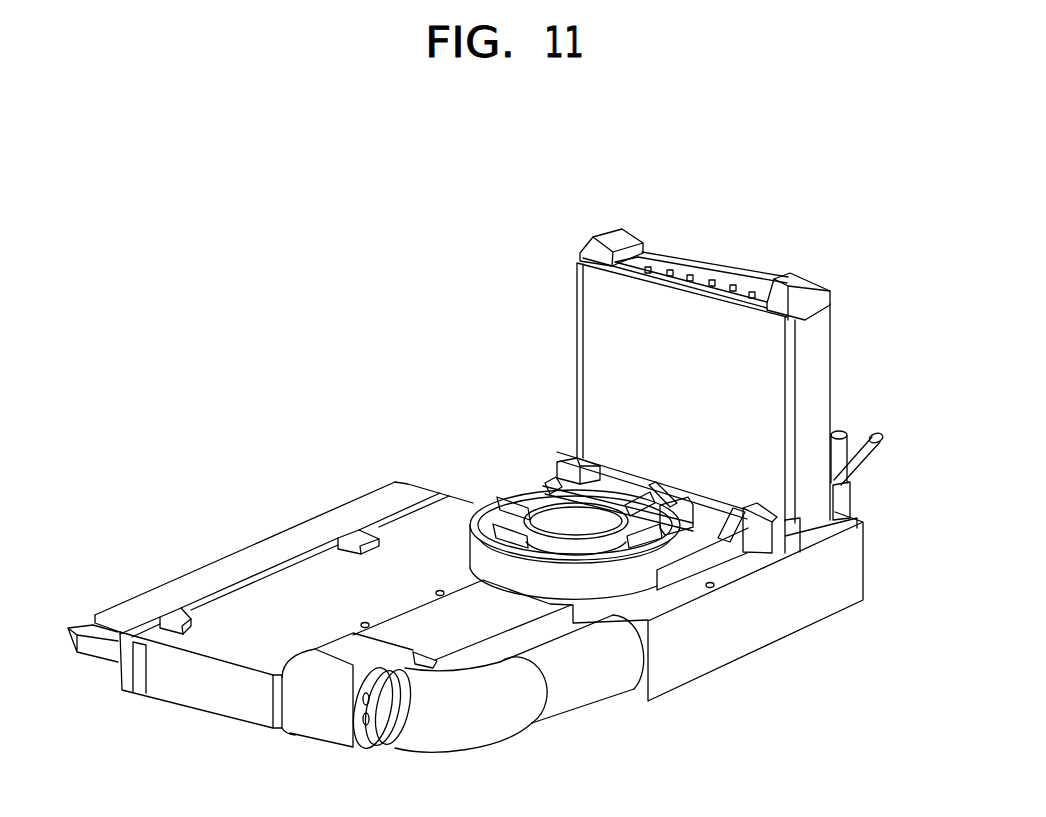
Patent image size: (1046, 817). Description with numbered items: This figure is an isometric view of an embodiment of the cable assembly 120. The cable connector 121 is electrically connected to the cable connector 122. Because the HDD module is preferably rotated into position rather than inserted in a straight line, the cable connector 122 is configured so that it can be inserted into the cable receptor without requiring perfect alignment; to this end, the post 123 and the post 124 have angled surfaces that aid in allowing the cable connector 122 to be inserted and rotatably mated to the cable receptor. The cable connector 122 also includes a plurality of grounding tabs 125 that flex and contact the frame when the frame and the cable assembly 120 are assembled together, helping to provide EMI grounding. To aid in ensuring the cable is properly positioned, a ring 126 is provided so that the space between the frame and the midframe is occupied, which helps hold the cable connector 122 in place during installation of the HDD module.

The cable assembly 120 is at (349, 412).
The cable connector 121 is at (285, 530).
The cable connector 122 is at (832, 350).
The post 123 is at (621, 230).
The post 124 is at (813, 281).
The grounding tabs 125 is at (884, 443).
The ring 126 is at (463, 500).